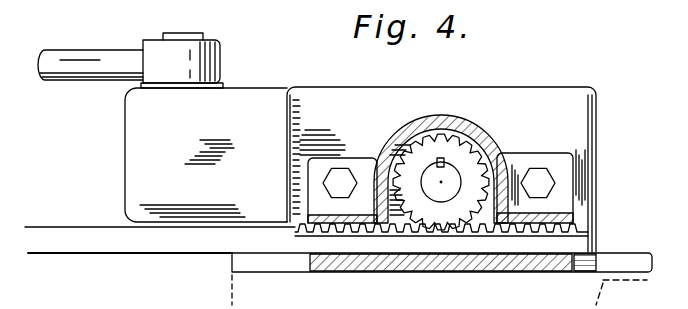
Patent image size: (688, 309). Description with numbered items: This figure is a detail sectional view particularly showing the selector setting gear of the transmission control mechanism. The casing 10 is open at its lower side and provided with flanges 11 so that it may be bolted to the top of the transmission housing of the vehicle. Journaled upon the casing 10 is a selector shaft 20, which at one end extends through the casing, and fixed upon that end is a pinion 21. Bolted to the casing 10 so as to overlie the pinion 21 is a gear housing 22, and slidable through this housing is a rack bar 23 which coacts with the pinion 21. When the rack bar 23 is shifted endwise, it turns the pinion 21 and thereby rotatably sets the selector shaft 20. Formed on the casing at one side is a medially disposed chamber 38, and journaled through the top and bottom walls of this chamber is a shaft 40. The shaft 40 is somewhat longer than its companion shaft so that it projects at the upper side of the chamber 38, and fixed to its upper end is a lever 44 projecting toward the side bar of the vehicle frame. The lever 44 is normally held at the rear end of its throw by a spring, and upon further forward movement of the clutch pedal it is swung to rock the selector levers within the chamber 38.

The casing 10 is at (557, 97).
The flanges 11 is at (627, 260).
The selector shaft 20 is at (442, 173).
The pinion 21 is at (500, 152).
The gear housing 22 is at (476, 131).
The rack bar 23 is at (163, 248).
The chamber 38 is at (151, 161).
The shaft 40 is at (180, 35).
The lever 44 is at (78, 63).